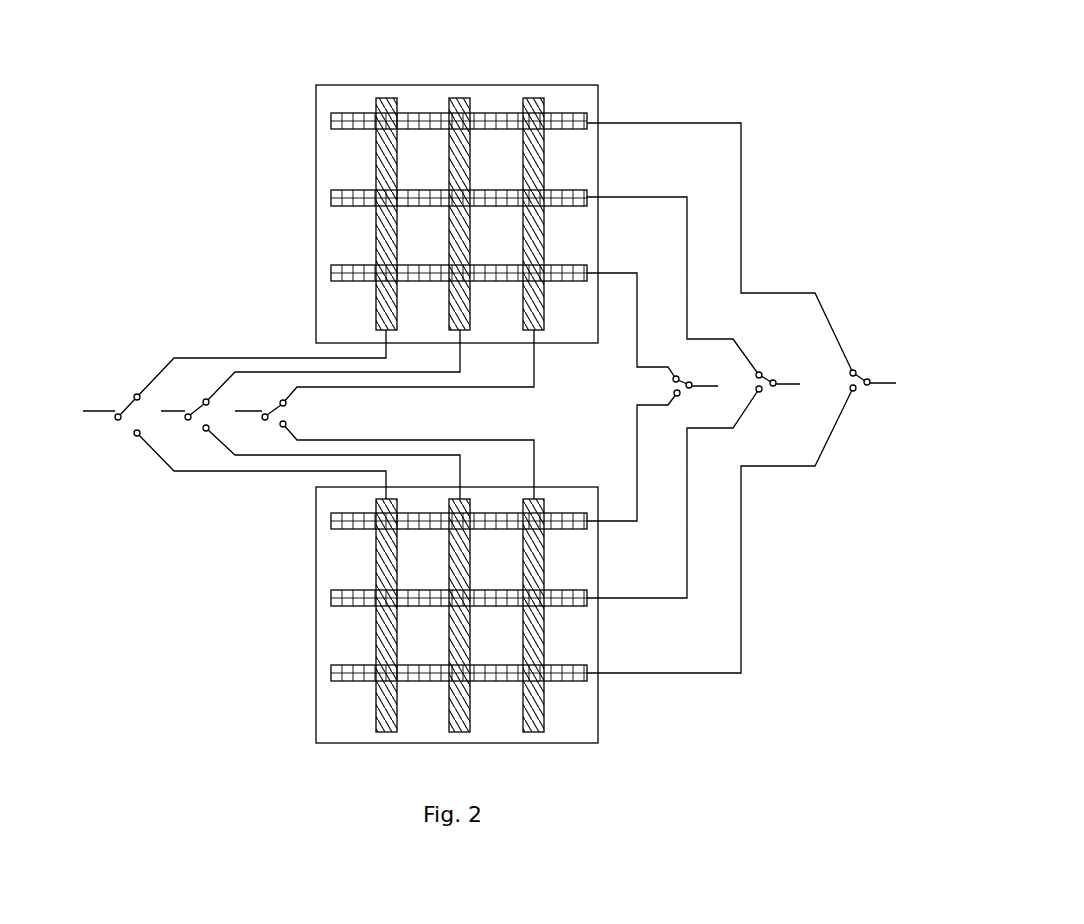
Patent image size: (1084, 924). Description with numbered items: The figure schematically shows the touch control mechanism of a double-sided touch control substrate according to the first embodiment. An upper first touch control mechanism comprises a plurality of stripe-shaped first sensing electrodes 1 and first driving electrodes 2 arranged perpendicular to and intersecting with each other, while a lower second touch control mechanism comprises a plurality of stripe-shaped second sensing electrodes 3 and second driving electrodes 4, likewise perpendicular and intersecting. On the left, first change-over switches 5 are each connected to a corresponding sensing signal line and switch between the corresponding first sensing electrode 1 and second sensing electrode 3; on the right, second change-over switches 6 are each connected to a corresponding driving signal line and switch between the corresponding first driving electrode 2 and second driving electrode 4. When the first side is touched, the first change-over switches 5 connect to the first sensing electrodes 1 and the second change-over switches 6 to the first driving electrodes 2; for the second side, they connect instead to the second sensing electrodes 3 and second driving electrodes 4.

The first sensing electrodes 1 is at (388, 102).
The first driving electrodes 2 is at (564, 120).
The second sensing electrodes 3 is at (386, 728).
The second driving electrodes 4 is at (571, 680).
The first change-over switches 5 is at (122, 428).
The second change-over switches 6 is at (876, 400).